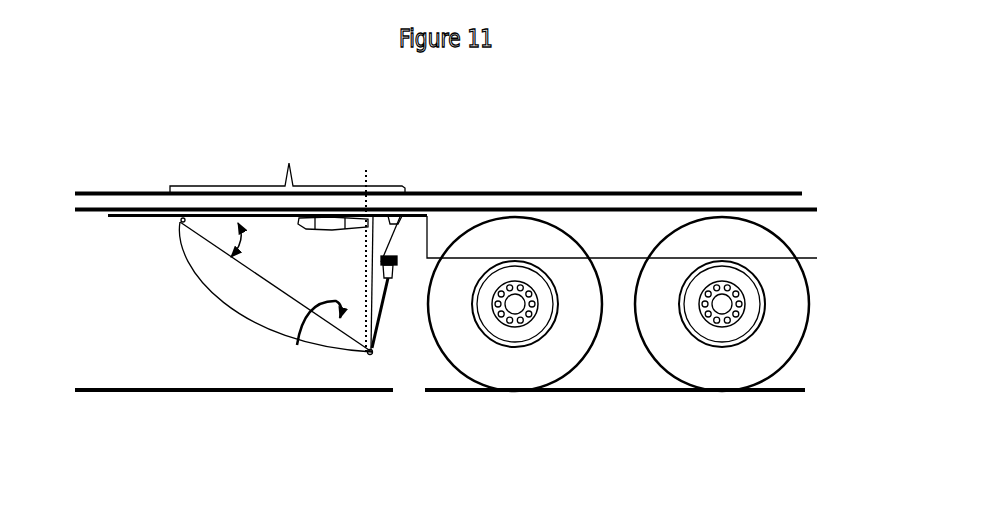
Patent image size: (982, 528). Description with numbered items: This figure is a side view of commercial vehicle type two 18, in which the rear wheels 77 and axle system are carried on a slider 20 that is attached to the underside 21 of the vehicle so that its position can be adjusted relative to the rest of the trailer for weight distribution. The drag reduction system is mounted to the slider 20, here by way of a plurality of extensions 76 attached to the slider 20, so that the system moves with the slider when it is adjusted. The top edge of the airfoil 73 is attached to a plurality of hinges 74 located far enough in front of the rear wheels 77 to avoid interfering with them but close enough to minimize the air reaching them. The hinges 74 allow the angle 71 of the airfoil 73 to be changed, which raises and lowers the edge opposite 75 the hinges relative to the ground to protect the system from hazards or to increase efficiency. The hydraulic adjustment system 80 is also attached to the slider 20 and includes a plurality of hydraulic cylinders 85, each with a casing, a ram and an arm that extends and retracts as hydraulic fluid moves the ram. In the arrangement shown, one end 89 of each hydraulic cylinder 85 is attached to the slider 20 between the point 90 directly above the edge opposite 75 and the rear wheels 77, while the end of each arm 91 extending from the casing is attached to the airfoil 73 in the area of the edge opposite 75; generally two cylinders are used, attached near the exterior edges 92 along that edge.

The commercial vehicle type two 18 is at (610, 190).
The slider 20 is at (446, 234).
The underside 21 is at (98, 207).
The angle 71 is at (251, 240).
The airfoil 73 is at (275, 287).
The plurality of hinges 74 is at (182, 216).
The edge opposite 75 is at (369, 367).
The plurality of extensions 76 is at (262, 213).
The rear wheels 77 is at (685, 355).
The hydraulic adjustment system 80 is at (287, 165).
The hydraulic cylinders 85 is at (398, 256).
The one end of the hydraulic cylinder 89 is at (398, 216).
The point directly above the edge opposite the hinges 90 is at (368, 250).
The end of each arm 91 is at (374, 357).
The exterior edges 92 is at (308, 338).